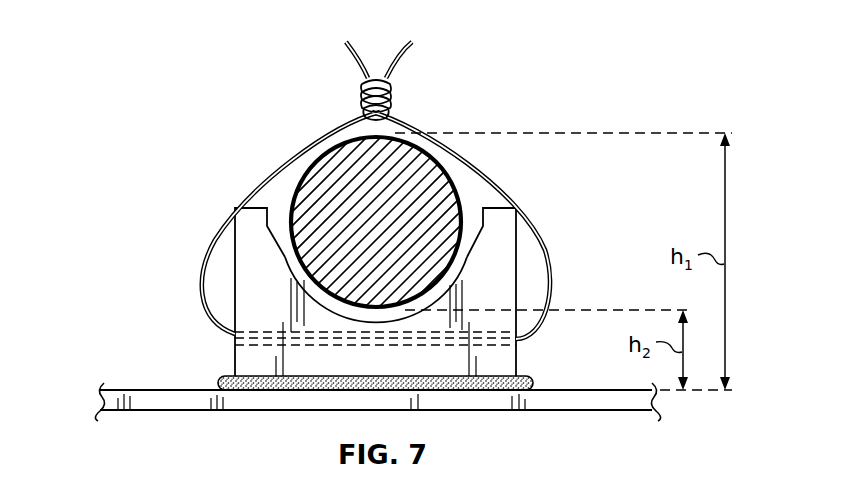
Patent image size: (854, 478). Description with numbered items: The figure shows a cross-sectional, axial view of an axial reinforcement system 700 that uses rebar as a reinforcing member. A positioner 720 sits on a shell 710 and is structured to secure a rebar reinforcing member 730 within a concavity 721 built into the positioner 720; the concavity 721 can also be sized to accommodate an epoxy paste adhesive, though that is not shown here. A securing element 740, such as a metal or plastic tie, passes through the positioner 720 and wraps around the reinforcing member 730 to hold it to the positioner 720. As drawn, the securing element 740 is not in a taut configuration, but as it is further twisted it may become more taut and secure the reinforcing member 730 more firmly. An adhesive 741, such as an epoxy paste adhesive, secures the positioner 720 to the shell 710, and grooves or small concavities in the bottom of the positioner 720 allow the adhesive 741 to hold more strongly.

The system 700 is at (106, 76).
The shell 710 is at (160, 390).
The positioner 720 is at (247, 208).
The concavity 721 is at (474, 218).
The rebar reinforcing member 730 is at (436, 153).
The securing element 740 is at (540, 222).
The adhesive 741 is at (533, 378).